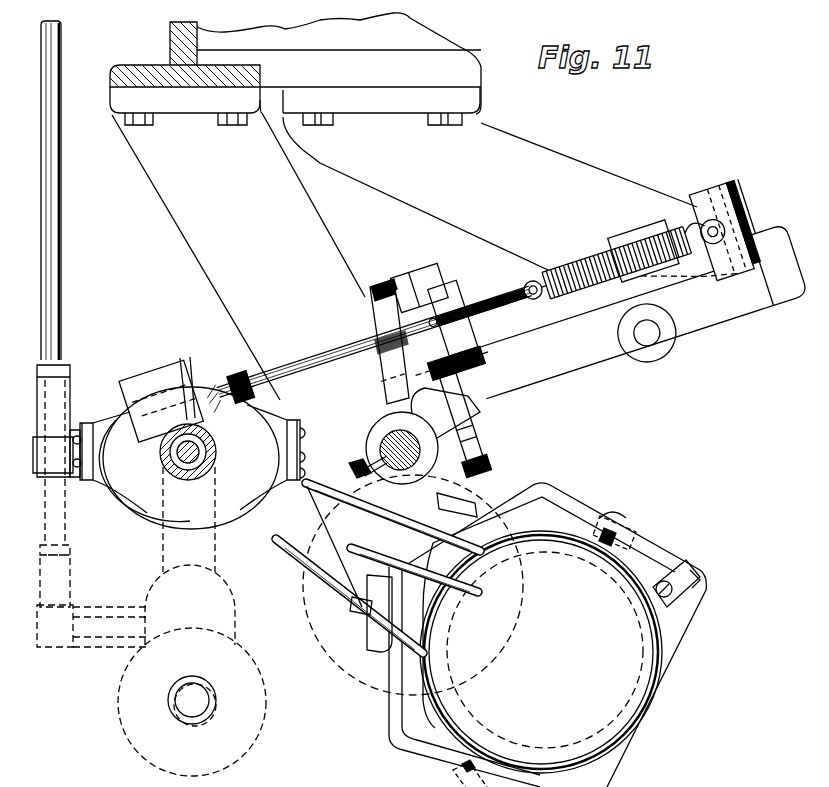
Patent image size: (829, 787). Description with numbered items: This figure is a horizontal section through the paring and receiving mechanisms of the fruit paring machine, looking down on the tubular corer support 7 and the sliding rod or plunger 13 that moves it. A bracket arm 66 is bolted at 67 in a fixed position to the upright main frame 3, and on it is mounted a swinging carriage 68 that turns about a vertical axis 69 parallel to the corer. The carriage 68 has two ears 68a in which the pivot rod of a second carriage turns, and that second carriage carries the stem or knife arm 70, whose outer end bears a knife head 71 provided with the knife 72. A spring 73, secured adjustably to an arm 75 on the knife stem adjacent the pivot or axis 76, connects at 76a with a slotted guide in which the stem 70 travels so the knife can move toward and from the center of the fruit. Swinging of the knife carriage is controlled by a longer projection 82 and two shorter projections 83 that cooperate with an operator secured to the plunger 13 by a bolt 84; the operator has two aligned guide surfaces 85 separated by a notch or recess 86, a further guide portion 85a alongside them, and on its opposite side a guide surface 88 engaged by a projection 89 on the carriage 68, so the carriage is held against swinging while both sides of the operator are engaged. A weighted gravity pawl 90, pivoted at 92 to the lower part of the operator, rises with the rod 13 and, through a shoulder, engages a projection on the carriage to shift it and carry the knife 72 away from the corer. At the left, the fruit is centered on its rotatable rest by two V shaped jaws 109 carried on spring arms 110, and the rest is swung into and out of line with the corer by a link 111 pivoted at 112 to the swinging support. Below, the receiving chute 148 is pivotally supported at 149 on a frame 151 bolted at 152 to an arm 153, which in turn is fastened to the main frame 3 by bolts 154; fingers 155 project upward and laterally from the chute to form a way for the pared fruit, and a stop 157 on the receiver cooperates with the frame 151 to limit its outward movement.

The upright frame 3 is at (172, 35).
The tubular corer support 7 is at (184, 478).
The sliding rod or plunger 13 is at (380, 442).
The bracket arm 66 is at (570, 165).
The bolt 67 is at (470, 123).
The swinging carriage 68 is at (635, 311).
The ears 68a is at (674, 256).
The axis 69 is at (646, 332).
The stem or knife arm 70 is at (375, 344).
The knife head 71 is at (202, 364).
The knife 72 is at (142, 377).
The spring 73 is at (624, 260).
The arm 75 is at (745, 221).
The pivot or axis 76 is at (721, 232).
The spring connection 76a is at (477, 308).
The projection 82 is at (389, 341).
The projections 83 is at (433, 312).
The bolt 84 is at (349, 469).
The guide surfaces 85 is at (393, 378).
The clamp member 85a is at (384, 287).
The notch or recess 86 is at (390, 408).
The guide surface 88 is at (456, 363).
The projection 89 is at (471, 416).
The gravity pawl 90 is at (467, 433).
The pivot 92 is at (477, 465).
The V shaped jaws 109 is at (85, 423).
The spring arms 110 is at (86, 480).
The link 111 is at (61, 246).
The pivot 112 is at (73, 400).
The chute 148 is at (652, 726).
The pivots 149 is at (631, 542).
The frame 151 is at (570, 503).
The bolt 152 is at (485, 479).
The arm 153 is at (196, 250).
The bolts 154 is at (130, 122).
The fingers 155 is at (468, 564).
The stop 157 is at (688, 557).